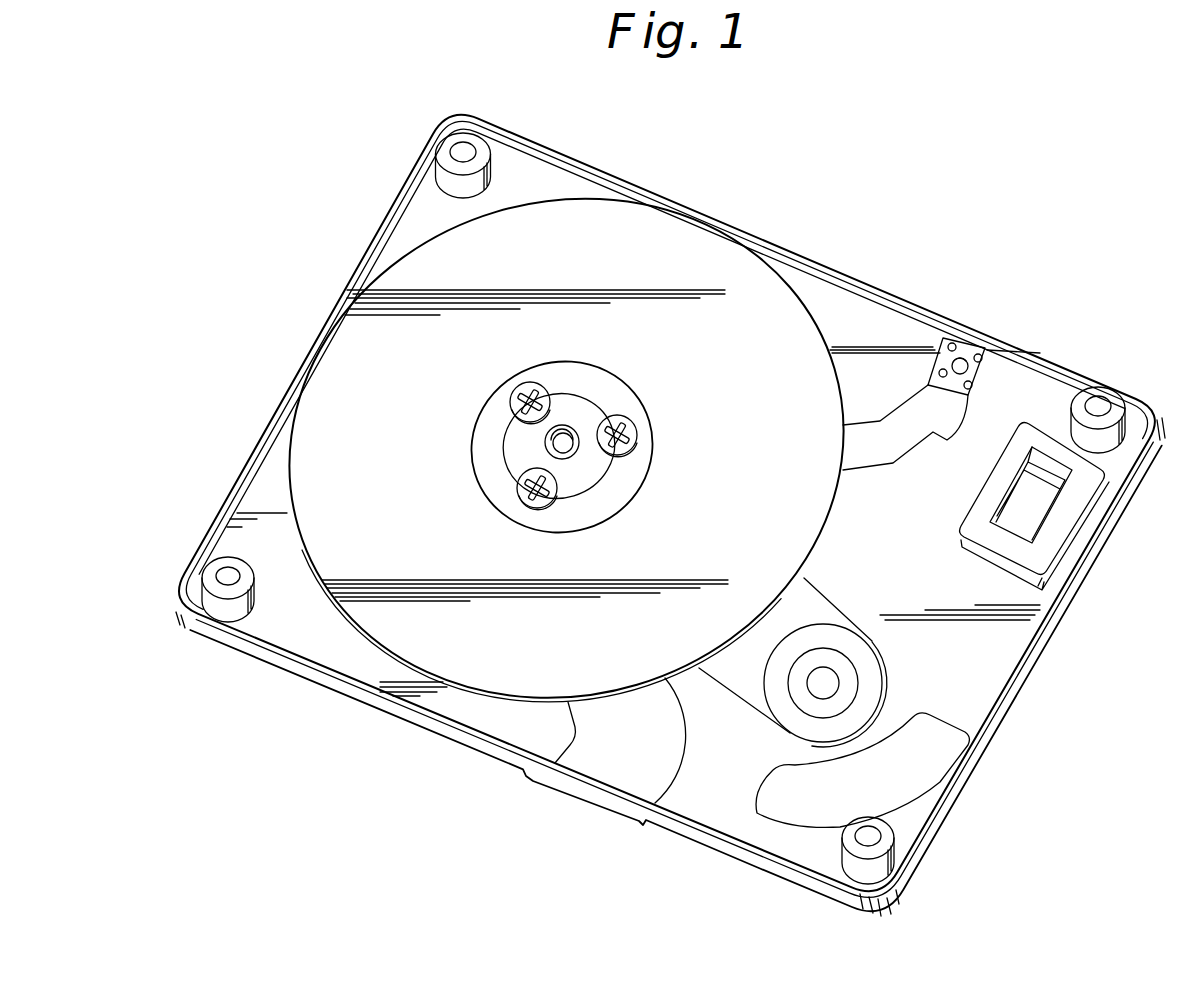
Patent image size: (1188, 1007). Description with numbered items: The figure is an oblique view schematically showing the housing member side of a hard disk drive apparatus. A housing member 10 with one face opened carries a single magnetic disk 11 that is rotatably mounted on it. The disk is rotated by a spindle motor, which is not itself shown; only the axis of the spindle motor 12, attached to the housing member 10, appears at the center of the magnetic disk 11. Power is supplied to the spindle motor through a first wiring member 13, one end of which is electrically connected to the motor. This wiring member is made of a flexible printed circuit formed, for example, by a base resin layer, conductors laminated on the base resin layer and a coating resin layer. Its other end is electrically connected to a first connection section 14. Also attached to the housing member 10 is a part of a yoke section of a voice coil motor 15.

The housing member 10 is at (1005, 645).
The magnetic disk 11 is at (630, 232).
The axis of a spindle motor 12 is at (545, 442).
The first wiring member 13 is at (947, 440).
The first connection section 14 is at (932, 338).
The part of a yoke section of a VCM 15 is at (925, 763).